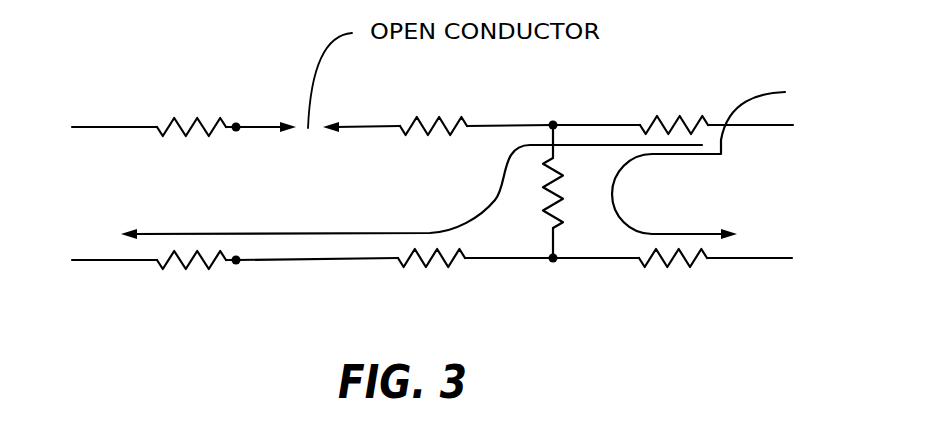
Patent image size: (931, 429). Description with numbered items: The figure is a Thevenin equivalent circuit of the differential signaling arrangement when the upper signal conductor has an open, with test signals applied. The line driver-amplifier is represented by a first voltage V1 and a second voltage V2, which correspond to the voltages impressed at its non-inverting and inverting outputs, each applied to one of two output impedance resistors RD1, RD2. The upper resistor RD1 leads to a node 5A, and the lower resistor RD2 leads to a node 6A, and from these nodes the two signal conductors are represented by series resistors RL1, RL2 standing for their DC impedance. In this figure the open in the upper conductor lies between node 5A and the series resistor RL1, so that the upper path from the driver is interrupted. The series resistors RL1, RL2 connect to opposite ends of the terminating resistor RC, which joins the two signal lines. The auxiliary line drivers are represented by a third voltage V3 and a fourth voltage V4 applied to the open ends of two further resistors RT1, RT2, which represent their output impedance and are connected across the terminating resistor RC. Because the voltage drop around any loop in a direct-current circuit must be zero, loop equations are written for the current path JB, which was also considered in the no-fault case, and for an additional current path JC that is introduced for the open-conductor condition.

The first voltage V1 is at (92, 128).
The second voltage V2 is at (92, 260).
The third voltage V3 is at (814, 125).
The fourth voltage V4 is at (814, 257).
The output impedance resistor RD1 is at (190, 113).
The output impedance resistor RD2 is at (193, 275).
The series resistor RL1 is at (437, 112).
The series resistor RL2 is at (432, 273).
The resistor RT1 is at (677, 105).
The resistor RT2 is at (678, 272).
The terminating resistor RC is at (538, 197).
The first node 5A is at (238, 122).
The second node 6A is at (236, 266).
The current path Ib JB is at (714, 158).
The current path Ic JC is at (303, 233).